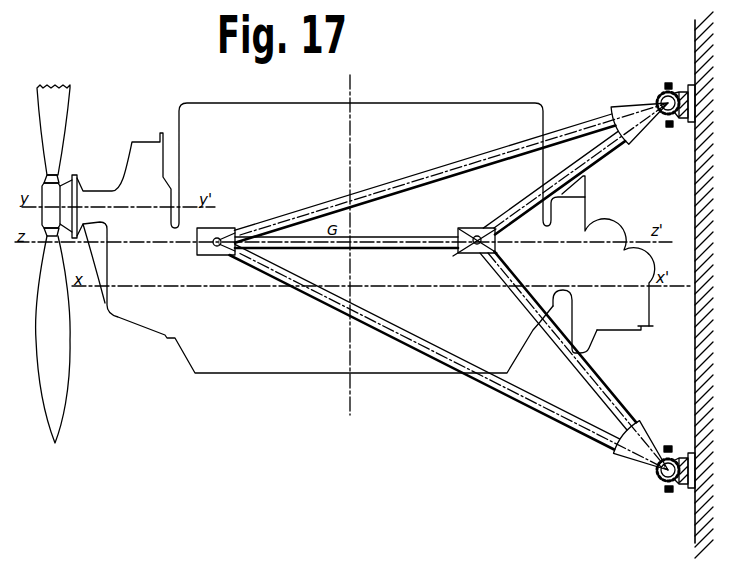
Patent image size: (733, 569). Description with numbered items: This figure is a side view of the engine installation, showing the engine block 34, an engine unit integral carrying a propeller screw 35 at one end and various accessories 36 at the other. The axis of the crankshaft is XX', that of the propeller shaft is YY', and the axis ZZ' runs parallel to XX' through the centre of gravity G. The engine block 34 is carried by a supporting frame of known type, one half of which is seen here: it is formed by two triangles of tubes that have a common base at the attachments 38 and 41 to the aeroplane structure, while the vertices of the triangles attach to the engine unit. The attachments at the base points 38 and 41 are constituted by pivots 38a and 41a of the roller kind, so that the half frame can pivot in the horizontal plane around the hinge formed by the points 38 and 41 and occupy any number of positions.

The engine block 34 is at (394, 112).
The propeller screw 35 is at (58, 375).
The accessories 36 is at (633, 323).
The common base 38 is at (649, 111).
The pivot 38a is at (681, 125).
The common base 41 is at (651, 455).
The pivot 41a is at (657, 491).